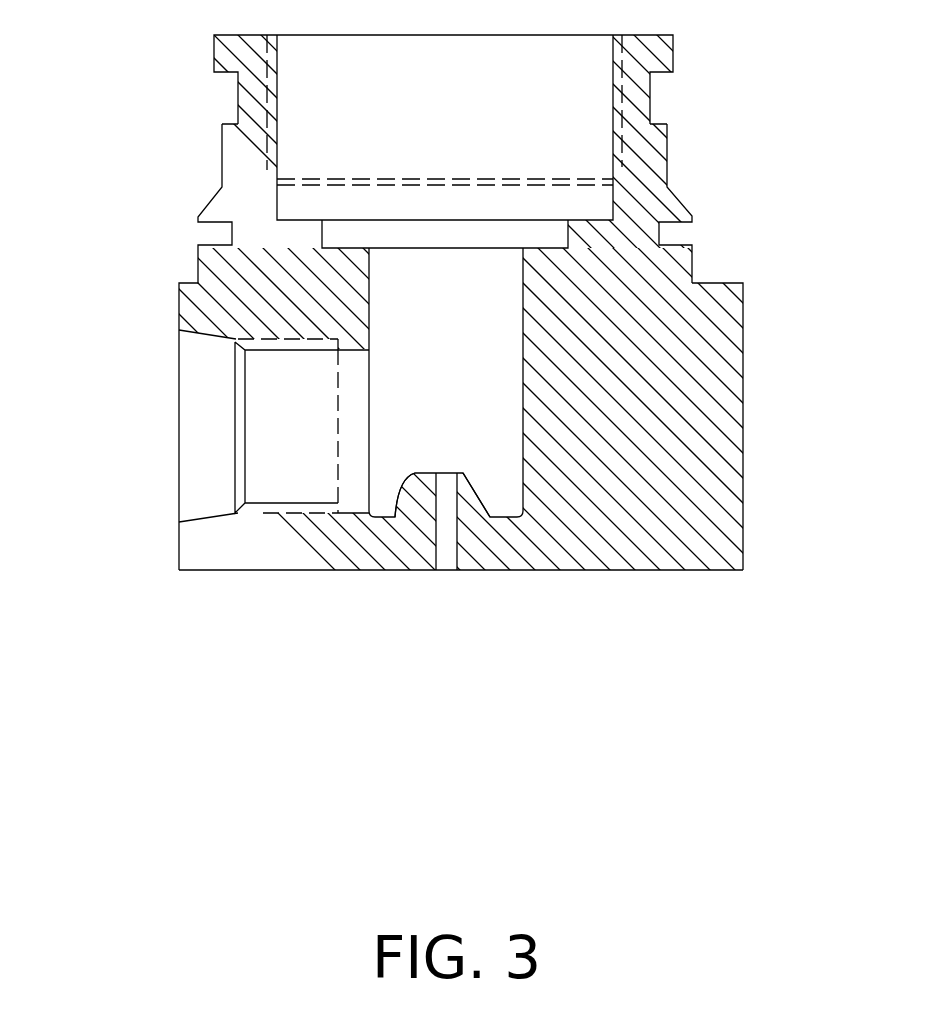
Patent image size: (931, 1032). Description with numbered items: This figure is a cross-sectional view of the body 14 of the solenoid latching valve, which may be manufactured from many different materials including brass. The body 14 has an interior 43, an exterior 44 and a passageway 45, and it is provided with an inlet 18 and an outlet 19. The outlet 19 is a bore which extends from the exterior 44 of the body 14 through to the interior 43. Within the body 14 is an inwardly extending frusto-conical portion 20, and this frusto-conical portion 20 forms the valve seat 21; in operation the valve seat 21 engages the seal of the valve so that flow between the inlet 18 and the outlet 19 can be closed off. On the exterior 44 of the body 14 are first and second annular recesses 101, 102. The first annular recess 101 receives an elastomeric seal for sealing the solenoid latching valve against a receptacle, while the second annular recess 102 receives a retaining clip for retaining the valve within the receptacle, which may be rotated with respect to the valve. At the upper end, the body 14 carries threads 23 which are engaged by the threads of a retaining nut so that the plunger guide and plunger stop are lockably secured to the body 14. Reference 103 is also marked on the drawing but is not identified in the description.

The body 14 is at (630, 470).
The inlet 18 is at (293, 435).
The outlet 19 is at (445, 545).
The frusto-conical portion 20 is at (473, 508).
The valve seat 21 is at (375, 510).
The threads 23 is at (610, 70).
The interior 43 is at (518, 377).
The exterior 44 is at (673, 570).
The passageway 45 is at (427, 435).
The first annular recess 101 is at (225, 70).
The second annular recess 102 is at (232, 227).
The side cavity 103 is at (258, 340).